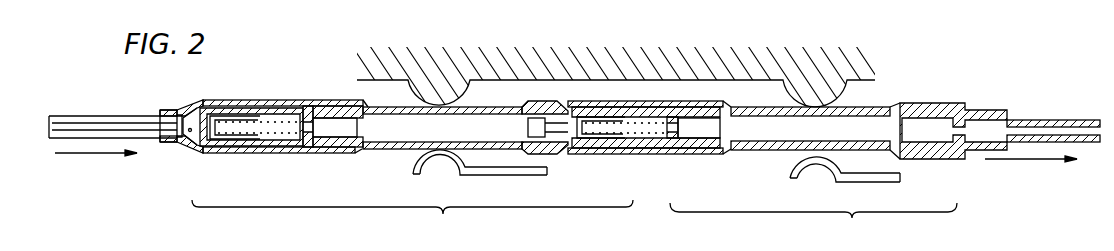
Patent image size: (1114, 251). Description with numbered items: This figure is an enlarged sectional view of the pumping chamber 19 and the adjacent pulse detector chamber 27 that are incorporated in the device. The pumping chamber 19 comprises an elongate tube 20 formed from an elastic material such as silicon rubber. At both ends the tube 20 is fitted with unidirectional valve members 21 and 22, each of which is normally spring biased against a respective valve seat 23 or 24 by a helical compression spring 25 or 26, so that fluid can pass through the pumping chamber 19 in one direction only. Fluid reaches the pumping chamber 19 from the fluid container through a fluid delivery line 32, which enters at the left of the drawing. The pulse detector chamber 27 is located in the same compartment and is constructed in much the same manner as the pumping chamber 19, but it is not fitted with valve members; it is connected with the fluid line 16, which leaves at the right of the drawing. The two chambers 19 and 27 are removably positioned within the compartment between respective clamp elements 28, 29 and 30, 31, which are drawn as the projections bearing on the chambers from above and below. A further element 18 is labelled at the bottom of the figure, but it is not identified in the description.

The fluid line 16 is at (1053, 118).
The connector assembly 18 is at (685, 250).
The pumping chamber 19 is at (396, 167).
The elongate tube 20 is at (390, 146).
The valve member 21 is at (223, 140).
The valve member 22 is at (592, 139).
The valve seat 23 is at (197, 138).
The valve seat 24 is at (560, 136).
The helical compression spring 25 is at (243, 120).
The helical compression spring 26 is at (615, 133).
The pulse detector chamber 27 is at (762, 168).
The clamp element 28 is at (437, 100).
The clamp element 29 is at (443, 162).
The clamp element 30 is at (815, 100).
The clamp element 31 is at (822, 166).
The fluid delivery line 32 is at (105, 116).